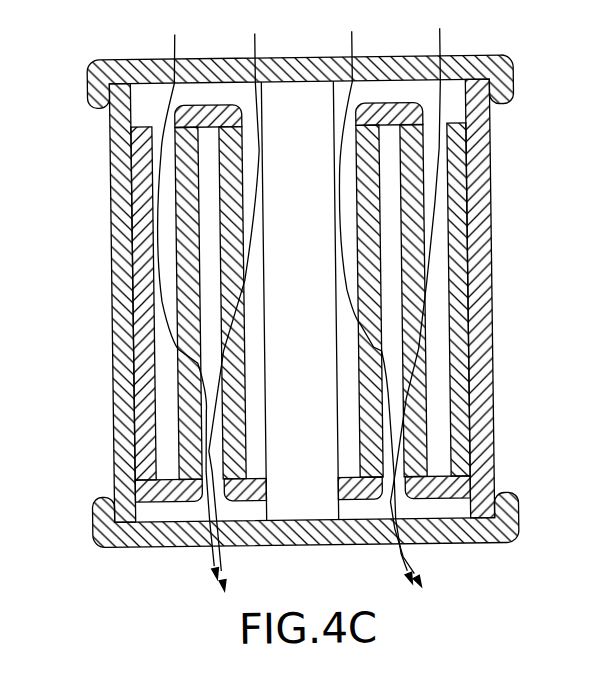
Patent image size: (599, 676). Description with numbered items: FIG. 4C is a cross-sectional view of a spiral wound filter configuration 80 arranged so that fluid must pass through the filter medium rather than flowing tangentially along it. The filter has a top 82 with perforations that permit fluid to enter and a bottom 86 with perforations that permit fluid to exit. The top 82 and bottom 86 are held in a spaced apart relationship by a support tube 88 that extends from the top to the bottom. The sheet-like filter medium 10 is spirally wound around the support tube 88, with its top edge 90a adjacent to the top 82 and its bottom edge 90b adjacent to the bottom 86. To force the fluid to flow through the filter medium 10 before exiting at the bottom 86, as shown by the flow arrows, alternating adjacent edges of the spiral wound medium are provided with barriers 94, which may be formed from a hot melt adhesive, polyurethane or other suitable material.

The spiral wound filter configuration 80 is at (470, 26).
The top 82 is at (304, 63).
The bottom 86 is at (301, 538).
The support tube 88 is at (288, 281).
The top edge 90a is at (108, 120).
The bottom edge 90b is at (194, 500).
The barriers 94 is at (209, 104).
The filter medium 10 is at (464, 298).